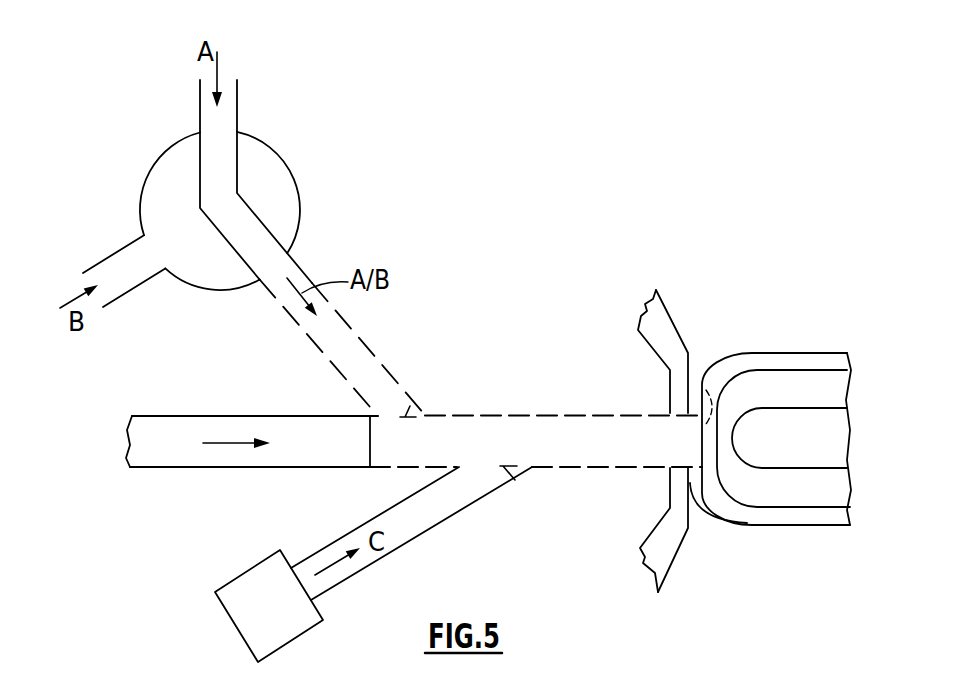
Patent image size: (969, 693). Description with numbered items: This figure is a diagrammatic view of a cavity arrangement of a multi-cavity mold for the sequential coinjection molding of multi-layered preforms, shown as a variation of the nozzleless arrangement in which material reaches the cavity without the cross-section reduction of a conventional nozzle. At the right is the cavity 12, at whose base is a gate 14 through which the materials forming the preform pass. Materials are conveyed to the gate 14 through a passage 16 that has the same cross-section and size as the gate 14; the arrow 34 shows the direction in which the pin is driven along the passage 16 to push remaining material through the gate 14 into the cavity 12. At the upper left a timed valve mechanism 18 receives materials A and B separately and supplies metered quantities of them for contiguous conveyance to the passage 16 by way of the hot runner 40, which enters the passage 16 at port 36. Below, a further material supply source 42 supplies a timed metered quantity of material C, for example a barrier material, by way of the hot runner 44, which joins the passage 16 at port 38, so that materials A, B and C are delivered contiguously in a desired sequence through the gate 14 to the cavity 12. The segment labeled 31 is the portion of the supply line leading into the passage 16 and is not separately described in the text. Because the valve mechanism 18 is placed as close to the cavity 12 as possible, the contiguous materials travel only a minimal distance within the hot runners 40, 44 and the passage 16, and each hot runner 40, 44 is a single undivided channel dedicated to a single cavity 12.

The cavity 12 is at (785, 370).
The gate 14 is at (698, 379).
The passage 16 is at (543, 451).
The timed valve mechanism 18 is at (301, 199).
The supply tube 31 is at (152, 416).
The arrow 34 is at (235, 443).
The port 36 is at (415, 400).
The port 38 is at (512, 478).
The hot runner 40 is at (378, 362).
The further material supply source 42 is at (283, 621).
The hot runner 44 is at (452, 518).